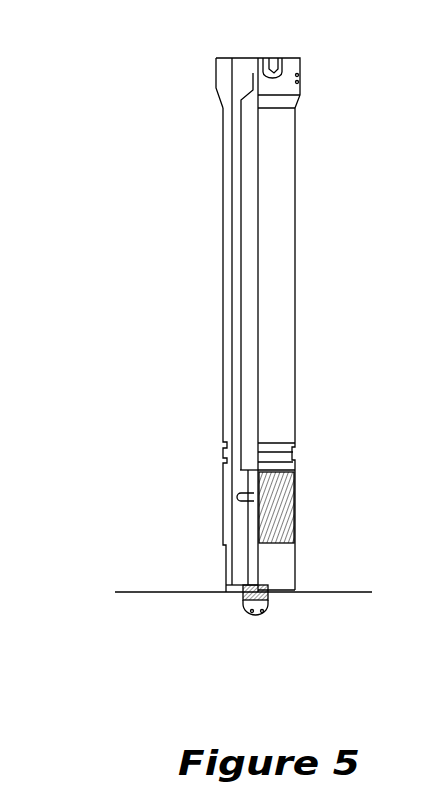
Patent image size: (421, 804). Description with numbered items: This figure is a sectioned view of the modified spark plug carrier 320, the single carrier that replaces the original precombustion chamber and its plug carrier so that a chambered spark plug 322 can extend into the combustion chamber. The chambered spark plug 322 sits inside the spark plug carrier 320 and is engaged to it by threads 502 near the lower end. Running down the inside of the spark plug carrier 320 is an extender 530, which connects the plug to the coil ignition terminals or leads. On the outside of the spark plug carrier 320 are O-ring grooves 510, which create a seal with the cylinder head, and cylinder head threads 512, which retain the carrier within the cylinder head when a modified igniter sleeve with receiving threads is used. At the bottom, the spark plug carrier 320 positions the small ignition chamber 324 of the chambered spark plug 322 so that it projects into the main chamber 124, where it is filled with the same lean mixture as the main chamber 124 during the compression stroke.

The spark plug carrier 320 is at (216, 66).
The chambered spark plug 322 is at (297, 242).
The extender 530 is at (247, 242).
The O-ring grooves 510 is at (295, 447).
The cylinder head threads 512 is at (293, 516).
The threads 502 is at (232, 585).
The main chamber 124 is at (260, 653).
The ignition chamber 324 is at (268, 598).